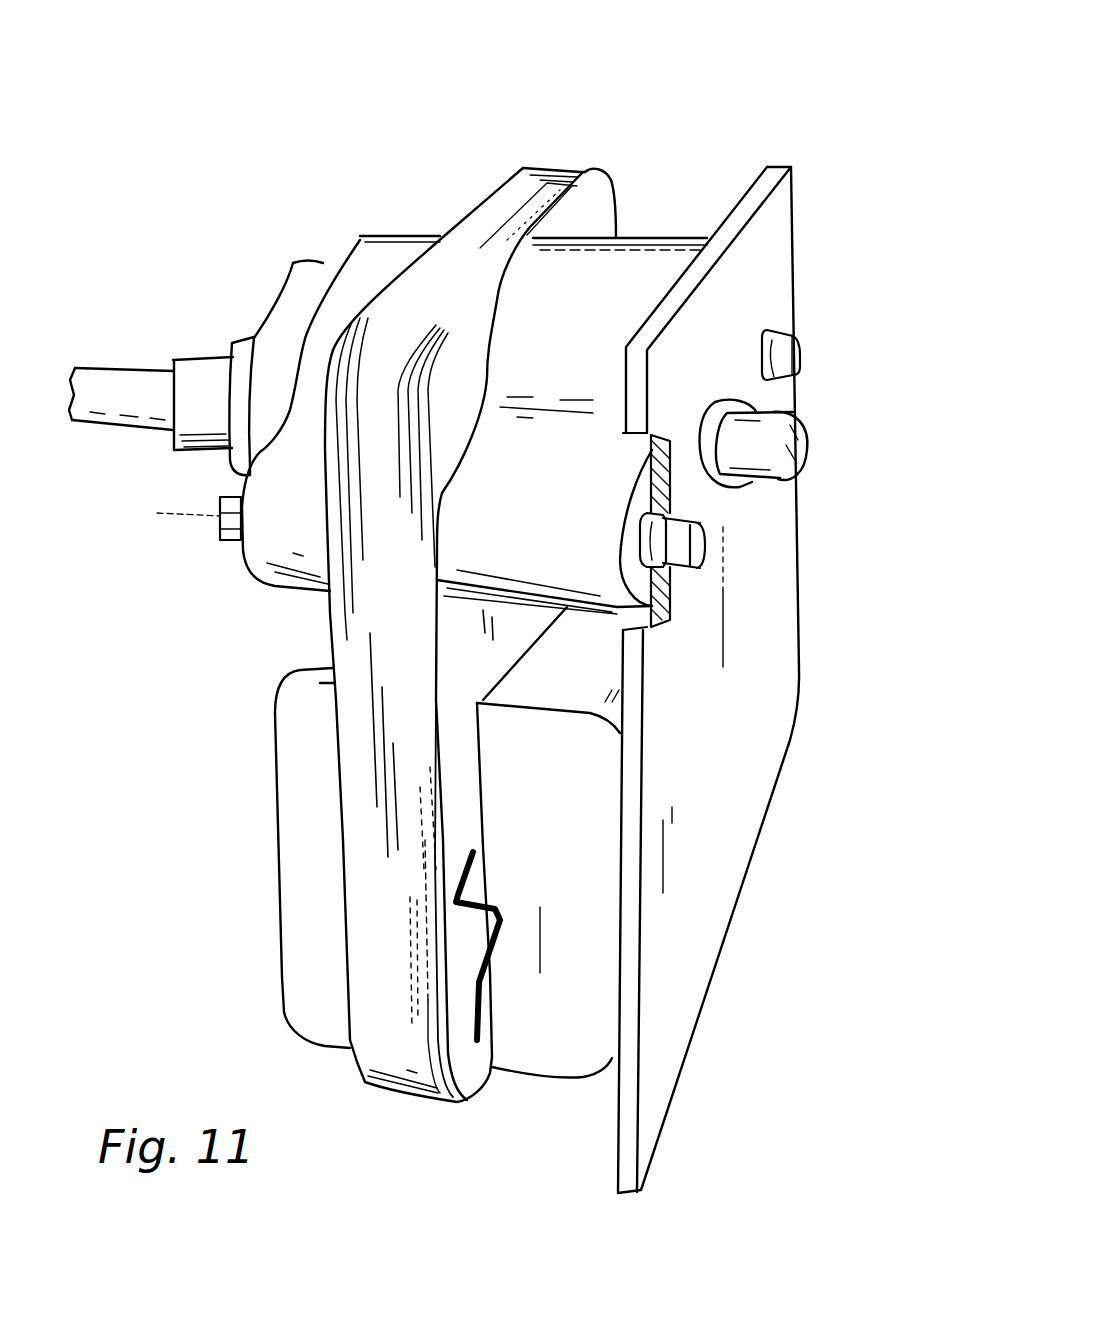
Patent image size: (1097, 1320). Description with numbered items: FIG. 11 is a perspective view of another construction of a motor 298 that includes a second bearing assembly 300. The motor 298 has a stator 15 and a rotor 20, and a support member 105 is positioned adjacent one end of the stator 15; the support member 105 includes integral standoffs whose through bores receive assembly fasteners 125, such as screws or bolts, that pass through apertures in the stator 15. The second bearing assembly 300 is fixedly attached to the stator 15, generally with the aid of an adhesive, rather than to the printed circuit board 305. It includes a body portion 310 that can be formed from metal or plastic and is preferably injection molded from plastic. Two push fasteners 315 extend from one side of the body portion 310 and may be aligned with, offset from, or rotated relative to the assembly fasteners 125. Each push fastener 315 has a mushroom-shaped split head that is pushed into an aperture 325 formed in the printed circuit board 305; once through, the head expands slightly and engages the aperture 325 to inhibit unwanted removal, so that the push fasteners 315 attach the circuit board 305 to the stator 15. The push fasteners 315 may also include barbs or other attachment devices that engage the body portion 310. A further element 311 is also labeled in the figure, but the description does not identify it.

The motor 298 is at (312, 108).
The rotor 20 is at (149, 385).
The support member 105 is at (362, 263).
The assembly fastener 125 is at (220, 538).
The stator 15 is at (347, 630).
The second bearing assembly 300 is at (620, 263).
The body portion 310 is at (552, 529).
The aperture 325 is at (640, 547).
The push fastener 315 is at (782, 332).
The boss 311 is at (718, 413).
The printed circuit board 305 is at (777, 630).